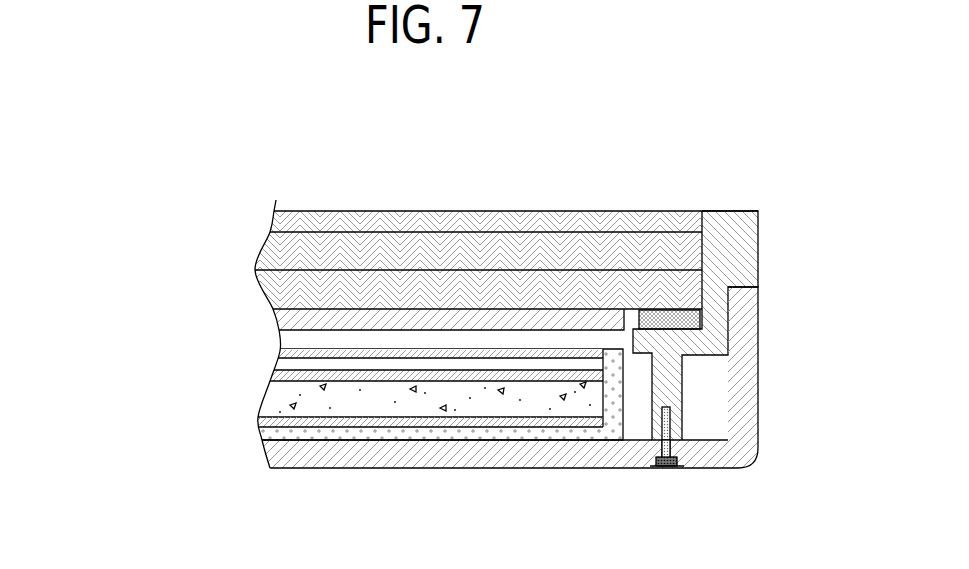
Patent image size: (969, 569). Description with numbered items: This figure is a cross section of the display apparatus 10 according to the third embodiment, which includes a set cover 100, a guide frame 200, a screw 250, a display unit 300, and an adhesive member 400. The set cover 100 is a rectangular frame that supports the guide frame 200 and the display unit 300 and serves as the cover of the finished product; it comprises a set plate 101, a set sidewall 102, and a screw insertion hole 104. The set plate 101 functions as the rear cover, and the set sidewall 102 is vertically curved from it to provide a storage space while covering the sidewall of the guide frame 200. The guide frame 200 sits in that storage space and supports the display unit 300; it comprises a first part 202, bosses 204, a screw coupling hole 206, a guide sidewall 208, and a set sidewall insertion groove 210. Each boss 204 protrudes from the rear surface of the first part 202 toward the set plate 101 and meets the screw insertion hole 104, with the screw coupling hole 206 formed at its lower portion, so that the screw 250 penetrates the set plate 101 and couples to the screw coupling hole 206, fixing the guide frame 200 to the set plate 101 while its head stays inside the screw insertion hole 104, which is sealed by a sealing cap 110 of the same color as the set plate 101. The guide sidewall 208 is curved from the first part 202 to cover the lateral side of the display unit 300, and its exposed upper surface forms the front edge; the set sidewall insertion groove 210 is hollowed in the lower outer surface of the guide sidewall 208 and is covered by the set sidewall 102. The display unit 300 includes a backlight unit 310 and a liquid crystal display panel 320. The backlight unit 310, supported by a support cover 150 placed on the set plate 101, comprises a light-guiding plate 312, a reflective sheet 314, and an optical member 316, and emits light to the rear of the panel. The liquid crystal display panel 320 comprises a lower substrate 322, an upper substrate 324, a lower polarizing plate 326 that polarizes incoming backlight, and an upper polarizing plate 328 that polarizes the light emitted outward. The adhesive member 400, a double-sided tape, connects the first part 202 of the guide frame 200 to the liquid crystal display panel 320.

The display apparatus 10 is at (454, 189).
The set cover 100 is at (768, 468).
The set plate 101 is at (271, 463).
The set sidewall 102 is at (747, 420).
The screw insertion hole 104 is at (685, 468).
The sealing cap 110 is at (657, 468).
The support cover 150 is at (260, 433).
The guide frame 200 is at (833, 258).
The first part 202 is at (693, 342).
The boss 204 is at (683, 369).
The screw coupling hole 206 is at (672, 400).
The guide sidewall 208 is at (737, 256).
The set sidewall insertion groove 210 is at (732, 303).
The screw 250 is at (673, 432).
The display unit 300 is at (90, 260).
The backlight unit 310 is at (140, 363).
The light-guiding plate 312 is at (265, 403).
The reflective sheet 314 is at (260, 419).
The optical member 316 is at (277, 372).
The liquid crystal display panel 320 is at (158, 207).
The lower substrate 322 is at (270, 295).
The upper substrate 324 is at (269, 253).
The lower polarizing plate 326 is at (279, 325).
The upper polarizing plate 328 is at (277, 223).
The adhesive member 400 is at (668, 318).